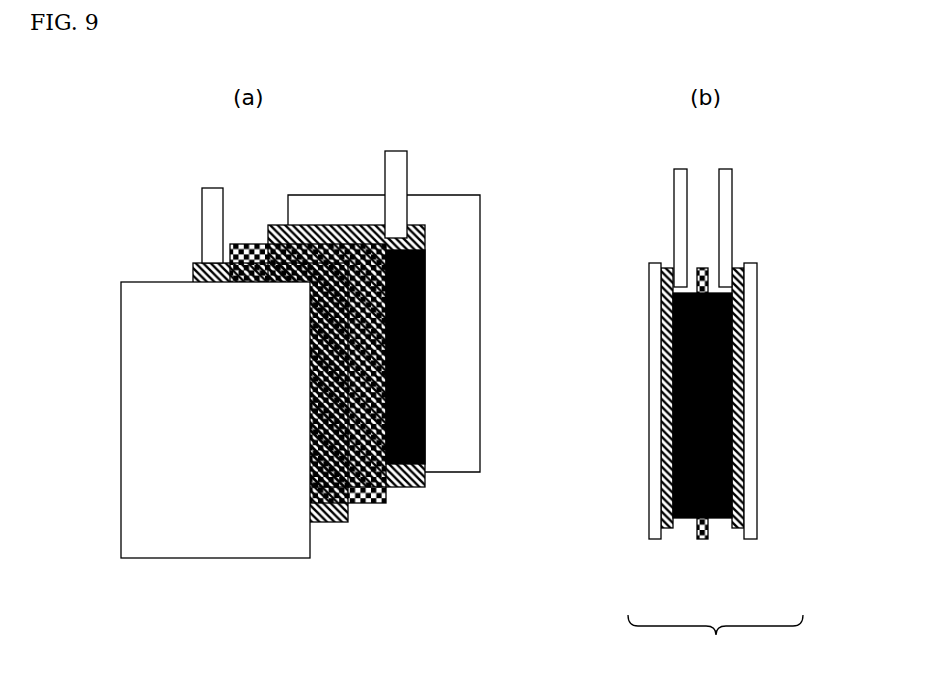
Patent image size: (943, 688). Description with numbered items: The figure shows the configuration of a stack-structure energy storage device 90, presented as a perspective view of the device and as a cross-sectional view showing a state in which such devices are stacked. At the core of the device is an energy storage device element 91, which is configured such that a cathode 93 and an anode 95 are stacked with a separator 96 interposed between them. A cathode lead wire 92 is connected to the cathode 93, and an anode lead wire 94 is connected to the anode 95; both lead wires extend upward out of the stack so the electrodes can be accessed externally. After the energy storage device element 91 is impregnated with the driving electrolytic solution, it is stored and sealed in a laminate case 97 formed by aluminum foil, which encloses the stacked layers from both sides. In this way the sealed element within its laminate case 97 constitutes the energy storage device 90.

The stack-structure energy storage device 90 is at (531, 670).
The energy storage device element 91 is at (748, 668).
The cathode lead wire 92 is at (202, 207).
The cathode 93 is at (328, 522).
The anode lead wire 94 is at (406, 170).
The anode 95 is at (408, 487).
The separator 96 is at (365, 503).
The laminate case 97 is at (478, 470).